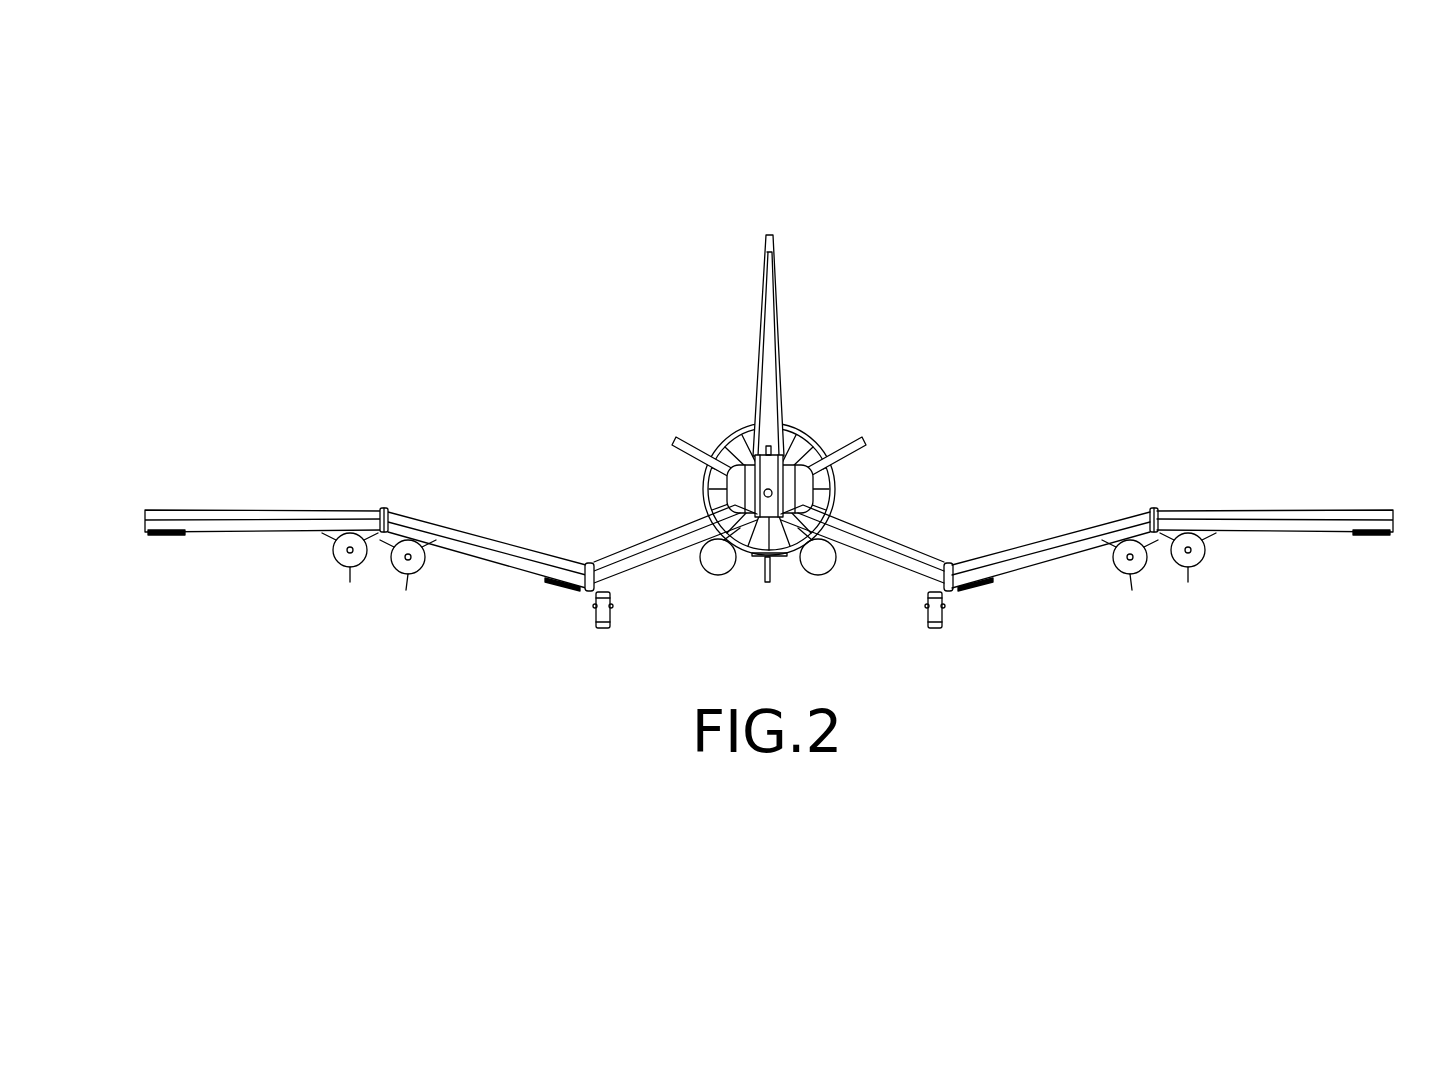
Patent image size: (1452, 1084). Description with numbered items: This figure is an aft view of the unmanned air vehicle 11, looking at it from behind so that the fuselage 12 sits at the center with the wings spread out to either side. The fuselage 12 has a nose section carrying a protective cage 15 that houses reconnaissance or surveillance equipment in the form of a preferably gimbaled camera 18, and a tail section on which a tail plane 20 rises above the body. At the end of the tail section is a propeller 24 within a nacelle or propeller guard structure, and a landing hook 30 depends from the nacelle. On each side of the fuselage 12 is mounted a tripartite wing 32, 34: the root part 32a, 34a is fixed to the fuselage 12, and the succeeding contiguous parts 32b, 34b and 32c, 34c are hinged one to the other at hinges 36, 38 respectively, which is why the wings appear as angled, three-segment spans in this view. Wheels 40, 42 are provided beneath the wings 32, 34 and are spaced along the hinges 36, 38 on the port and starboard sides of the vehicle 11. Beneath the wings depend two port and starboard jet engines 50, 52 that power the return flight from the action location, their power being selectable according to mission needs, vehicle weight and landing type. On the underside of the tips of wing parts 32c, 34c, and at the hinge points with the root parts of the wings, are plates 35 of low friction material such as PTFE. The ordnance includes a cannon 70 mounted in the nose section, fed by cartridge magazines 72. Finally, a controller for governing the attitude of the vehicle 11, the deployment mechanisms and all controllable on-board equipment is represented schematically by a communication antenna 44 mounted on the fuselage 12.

The unmanned air vehicle 11 is at (437, 297).
The fuselage 12 is at (803, 486).
The protective cage 15 is at (757, 423).
The gimbaled camera 18 is at (810, 496).
The tail plane 20 is at (768, 372).
The propeller 24 is at (762, 548).
The landing hook 30 is at (771, 573).
The tripartite wing 32 is at (1000, 458).
The root part 32a is at (913, 553).
The contiguous wing part 32b is at (1135, 510).
The contiguous wing part 32c is at (1262, 510).
The tripartite wing 34 is at (597, 481).
The root part 34a is at (655, 540).
The contiguous wing part 34b is at (494, 542).
The contiguous wing part 34c is at (280, 510).
The plates of low friction material 35 is at (163, 537).
The hinge 36 is at (605, 578).
The hinge 38 is at (383, 508).
The wheel 40 is at (938, 630).
The wheel 42 is at (602, 630).
The communication antenna 44 is at (771, 452).
The jet engine 50 is at (818, 565).
The jet engine 52 is at (720, 560).
The cannon 70 is at (763, 493).
The cartridge magazines 72 is at (672, 437).